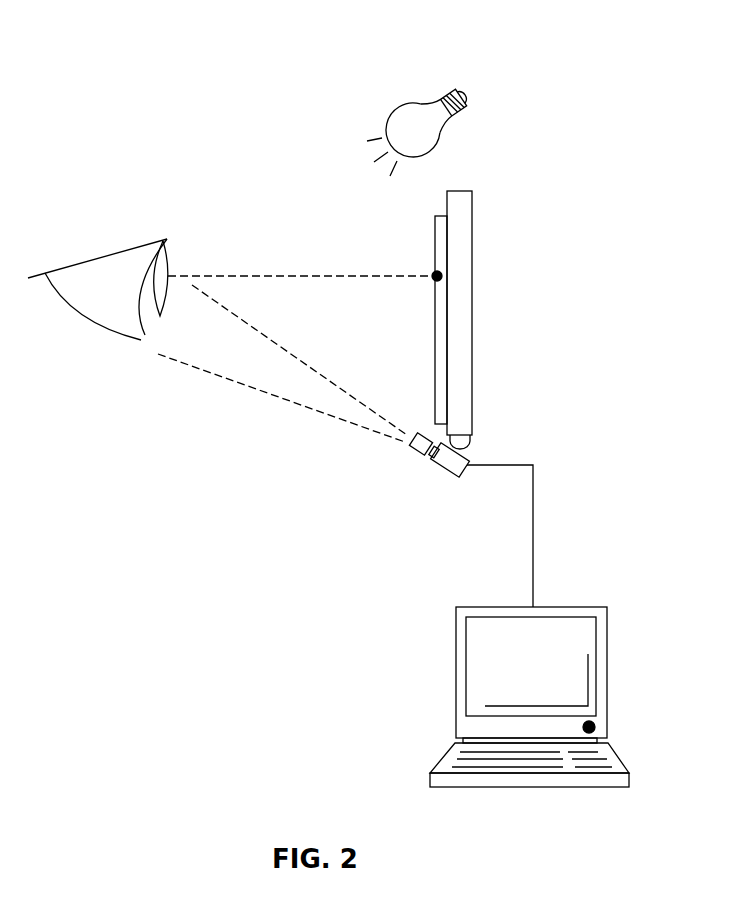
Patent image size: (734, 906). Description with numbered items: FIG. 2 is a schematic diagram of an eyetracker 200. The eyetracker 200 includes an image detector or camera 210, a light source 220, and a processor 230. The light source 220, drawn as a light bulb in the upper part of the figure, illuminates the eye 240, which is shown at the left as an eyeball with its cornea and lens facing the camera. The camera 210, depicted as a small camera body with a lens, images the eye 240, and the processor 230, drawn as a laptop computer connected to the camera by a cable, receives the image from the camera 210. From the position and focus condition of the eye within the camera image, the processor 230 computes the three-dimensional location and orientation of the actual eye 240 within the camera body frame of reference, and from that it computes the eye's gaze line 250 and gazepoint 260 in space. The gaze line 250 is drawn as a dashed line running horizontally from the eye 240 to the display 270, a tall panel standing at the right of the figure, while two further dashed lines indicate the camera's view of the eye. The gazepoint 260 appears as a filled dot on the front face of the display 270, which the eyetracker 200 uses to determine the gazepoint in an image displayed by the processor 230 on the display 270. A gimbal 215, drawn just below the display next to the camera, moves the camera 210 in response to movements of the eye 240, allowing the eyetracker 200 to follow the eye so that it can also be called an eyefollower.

The eyetracker 200 is at (172, 727).
The camera 210 is at (438, 476).
The gimbal 215 is at (471, 449).
The light source 220 is at (466, 109).
The processor 230 is at (608, 640).
The eye 240 is at (142, 240).
The gaze line 250 is at (273, 277).
The gazepoint 260 is at (432, 273).
The display 270 is at (472, 208).